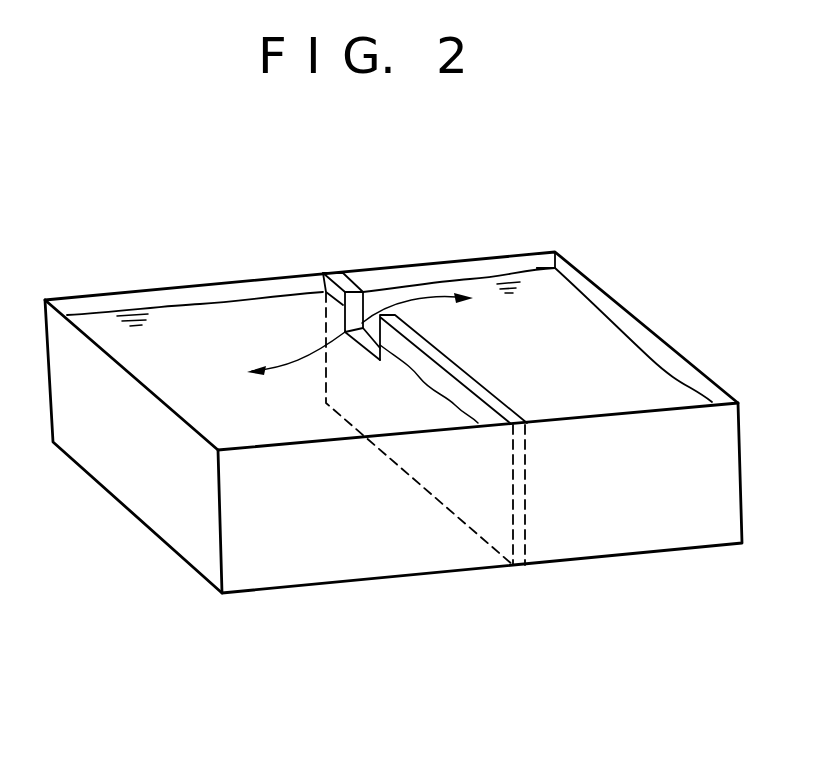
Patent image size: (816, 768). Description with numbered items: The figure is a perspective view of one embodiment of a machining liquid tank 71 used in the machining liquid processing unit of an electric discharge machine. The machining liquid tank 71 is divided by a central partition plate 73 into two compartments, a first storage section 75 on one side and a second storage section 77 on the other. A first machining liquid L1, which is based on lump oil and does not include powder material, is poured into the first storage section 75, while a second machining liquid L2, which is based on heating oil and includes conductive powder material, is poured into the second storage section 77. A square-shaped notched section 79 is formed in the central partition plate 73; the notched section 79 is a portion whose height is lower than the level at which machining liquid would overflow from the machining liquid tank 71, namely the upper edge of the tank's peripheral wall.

The machining liquid tank 71 is at (633, 528).
The central partition plate 73 is at (478, 390).
The first storage section 75 is at (303, 423).
The second storage section 77 is at (598, 392).
The notched section 79 is at (358, 313).
The first machining liquid L1 is at (213, 350).
The second machining liquid L2 is at (535, 308).